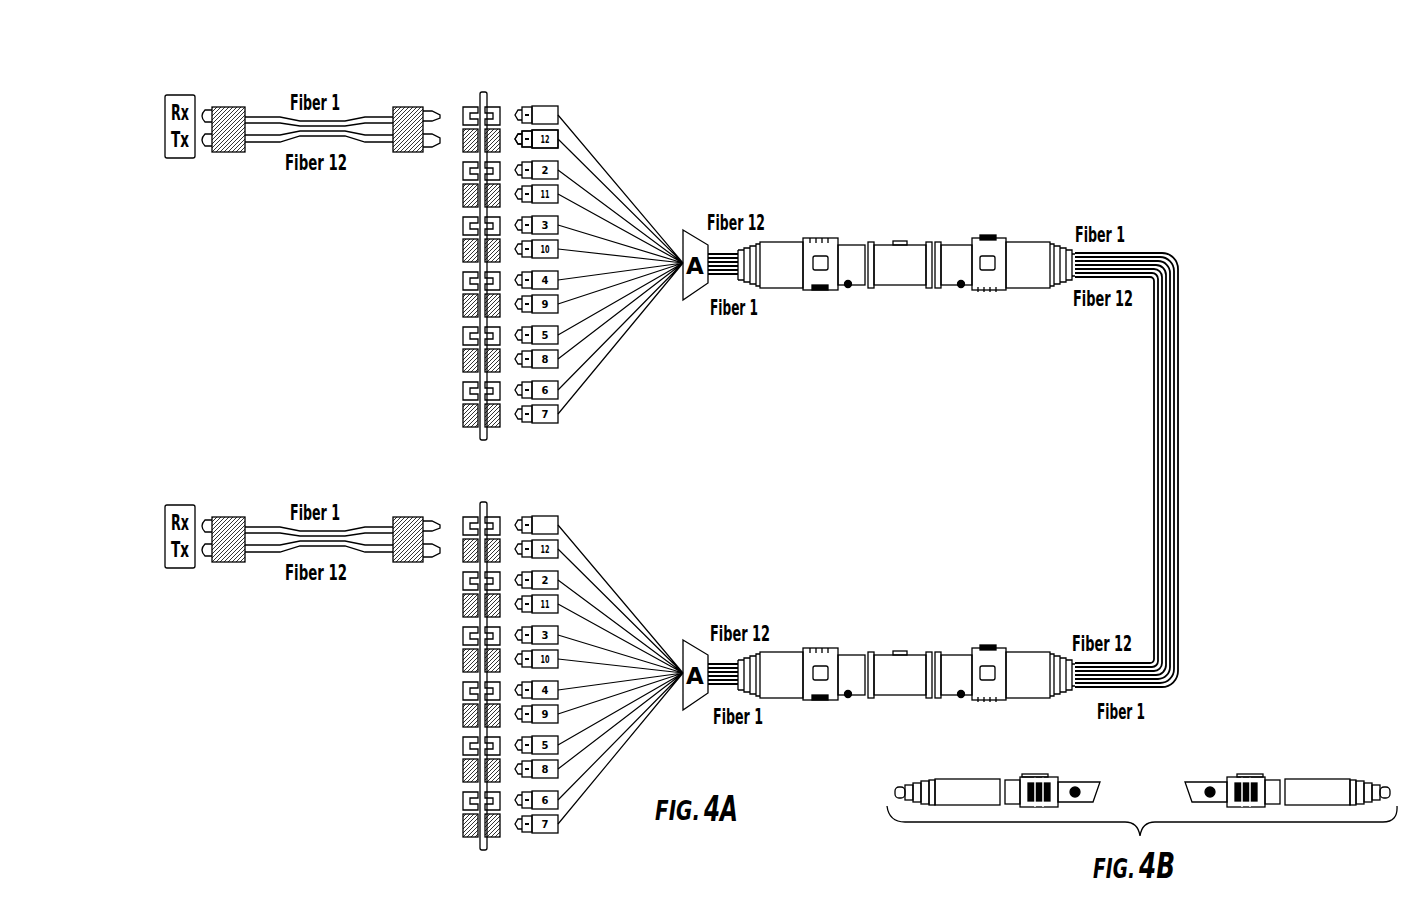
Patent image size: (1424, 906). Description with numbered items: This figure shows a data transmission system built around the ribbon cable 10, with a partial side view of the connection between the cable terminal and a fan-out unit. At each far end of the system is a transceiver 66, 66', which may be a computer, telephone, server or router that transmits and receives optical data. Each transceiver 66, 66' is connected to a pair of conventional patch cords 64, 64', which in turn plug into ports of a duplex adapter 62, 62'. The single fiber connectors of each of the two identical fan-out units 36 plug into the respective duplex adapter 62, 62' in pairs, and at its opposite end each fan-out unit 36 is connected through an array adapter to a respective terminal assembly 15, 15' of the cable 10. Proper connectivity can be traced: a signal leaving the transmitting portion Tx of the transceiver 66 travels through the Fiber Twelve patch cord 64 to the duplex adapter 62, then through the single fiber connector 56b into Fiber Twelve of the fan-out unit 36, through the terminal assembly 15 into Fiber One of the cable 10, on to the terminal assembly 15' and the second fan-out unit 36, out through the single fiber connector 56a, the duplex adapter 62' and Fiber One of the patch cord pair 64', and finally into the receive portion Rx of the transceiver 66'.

The transceiver 66 is at (204, 115).
The patch cord 64 is at (326, 124).
The duplex adapter 62 is at (502, 254).
The single fiber connector 56a is at (557, 110).
The single fiber connector 56b is at (558, 136).
The fan-out unit 36 is at (689, 228).
The terminal assembly 15 is at (1005, 230).
The cable 10 is at (1180, 492).
The transceiver 66' is at (192, 512).
The patch cord 64' is at (326, 524).
The duplex adapter 62' is at (466, 654).
The terminal assembly 15' is at (1007, 697).